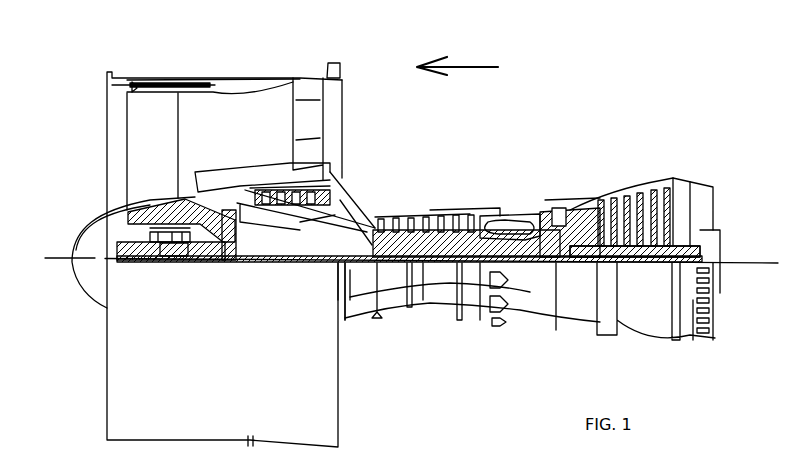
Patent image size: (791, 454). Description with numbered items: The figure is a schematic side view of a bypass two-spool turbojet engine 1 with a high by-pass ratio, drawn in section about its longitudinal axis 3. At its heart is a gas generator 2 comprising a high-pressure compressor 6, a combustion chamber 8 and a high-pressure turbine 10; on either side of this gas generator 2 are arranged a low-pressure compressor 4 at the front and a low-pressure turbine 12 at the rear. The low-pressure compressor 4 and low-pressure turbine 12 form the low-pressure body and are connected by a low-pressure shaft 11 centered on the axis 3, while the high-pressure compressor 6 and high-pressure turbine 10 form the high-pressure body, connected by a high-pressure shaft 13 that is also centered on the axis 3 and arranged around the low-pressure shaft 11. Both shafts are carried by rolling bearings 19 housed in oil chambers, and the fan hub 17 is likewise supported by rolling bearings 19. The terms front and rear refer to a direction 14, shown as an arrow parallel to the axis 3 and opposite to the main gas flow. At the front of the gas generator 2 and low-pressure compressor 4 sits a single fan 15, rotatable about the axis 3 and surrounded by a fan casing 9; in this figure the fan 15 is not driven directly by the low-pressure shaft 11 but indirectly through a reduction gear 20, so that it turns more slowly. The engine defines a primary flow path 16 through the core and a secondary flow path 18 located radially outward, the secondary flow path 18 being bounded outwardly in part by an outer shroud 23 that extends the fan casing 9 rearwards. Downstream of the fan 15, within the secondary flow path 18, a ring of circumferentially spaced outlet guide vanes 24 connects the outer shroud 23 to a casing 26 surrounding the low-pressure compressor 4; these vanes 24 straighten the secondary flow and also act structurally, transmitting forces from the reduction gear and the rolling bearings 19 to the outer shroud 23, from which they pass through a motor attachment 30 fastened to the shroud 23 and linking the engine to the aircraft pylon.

The turbojet engine 1 is at (476, 162).
The gas generator 2 is at (428, 318).
The longitudinal axis 3 is at (55, 268).
The low-pressure compressor 4 is at (302, 165).
The high-pressure compressor 6 is at (447, 237).
The combustion chamber 8 is at (508, 208).
The fan casing 9 is at (193, 78).
The high-pressure turbine 10 is at (558, 220).
The low-pressure shaft 11 is at (357, 300).
The low-pressure turbine 12 is at (638, 197).
The high-pressure shaft 13 is at (553, 263).
The direction 14 is at (481, 63).
The fan 15 is at (143, 132).
The primary flow path 16 is at (363, 225).
The fan hub 17 is at (158, 245).
The secondary flow path 18 is at (232, 127).
The rolling bearings 19 is at (186, 245).
The reduction gear 20 is at (233, 262).
The outer shroud 23 is at (273, 78).
The outlet guide vanes 24 is at (308, 122).
The casing 26 is at (271, 186).
The motor attachment 30 is at (342, 72).